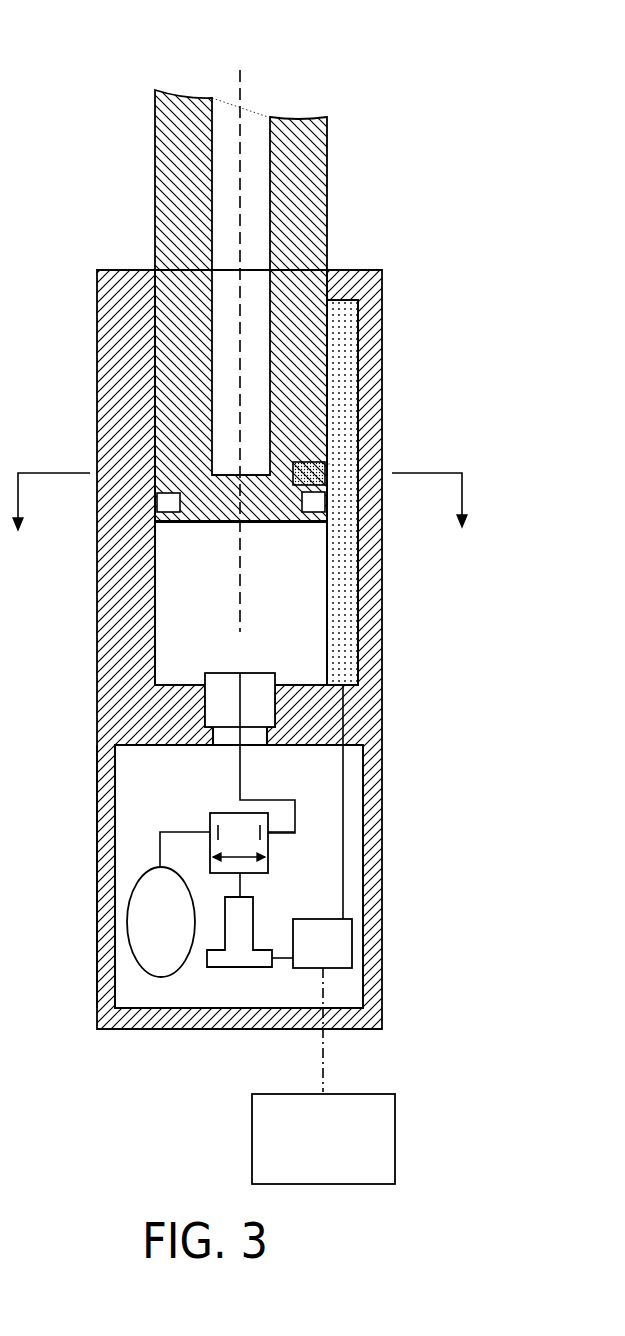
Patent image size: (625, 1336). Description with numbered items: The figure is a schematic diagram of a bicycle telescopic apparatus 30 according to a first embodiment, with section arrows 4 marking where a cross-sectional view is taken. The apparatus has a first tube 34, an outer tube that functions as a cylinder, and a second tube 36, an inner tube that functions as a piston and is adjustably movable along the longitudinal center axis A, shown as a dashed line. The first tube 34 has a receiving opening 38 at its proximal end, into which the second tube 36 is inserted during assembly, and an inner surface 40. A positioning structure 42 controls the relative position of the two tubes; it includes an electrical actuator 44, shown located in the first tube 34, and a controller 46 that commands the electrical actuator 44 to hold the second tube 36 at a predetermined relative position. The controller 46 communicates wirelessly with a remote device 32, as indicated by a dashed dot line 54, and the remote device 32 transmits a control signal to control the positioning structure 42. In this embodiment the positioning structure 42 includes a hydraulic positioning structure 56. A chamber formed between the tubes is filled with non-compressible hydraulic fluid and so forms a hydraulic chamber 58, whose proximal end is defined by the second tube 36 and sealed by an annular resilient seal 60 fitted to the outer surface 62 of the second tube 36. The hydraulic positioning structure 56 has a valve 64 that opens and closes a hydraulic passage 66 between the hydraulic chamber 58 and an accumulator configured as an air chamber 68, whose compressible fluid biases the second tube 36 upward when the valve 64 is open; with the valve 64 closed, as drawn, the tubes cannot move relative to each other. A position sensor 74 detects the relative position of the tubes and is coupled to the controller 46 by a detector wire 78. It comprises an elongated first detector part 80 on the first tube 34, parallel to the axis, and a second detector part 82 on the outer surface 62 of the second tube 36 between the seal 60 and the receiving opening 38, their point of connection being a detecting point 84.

The bicycle telescopic apparatus 30 is at (227, 516).
The remote device 32 is at (374, 1165).
The first tube 34 is at (367, 327).
The second tube 36 is at (297, 230).
The receiving opening 38 is at (200, 560).
The inner surface 40 is at (157, 611).
The positioning structure 42 is at (77, 863).
The electrical actuator 44 is at (252, 961).
The controller 46 is at (334, 958).
The dashed dot line 54 is at (325, 1077).
The hydraulic positioning structure 56 is at (177, 791).
The hydraulic chamber 58 is at (200, 600).
The seal 60 is at (166, 498).
The outer surface 62 is at (155, 388).
The valve 64 is at (251, 848).
The hydraulic passage 66 is at (295, 817).
The air chamber 68 is at (172, 933).
The position sensor 74 is at (296, 556).
The detector wire 78 is at (343, 848).
The first detector part 80 is at (342, 647).
The second detector part 82 is at (308, 475).
The detecting point 84 is at (333, 462).
The section line 4- 4 is at (241, 523).